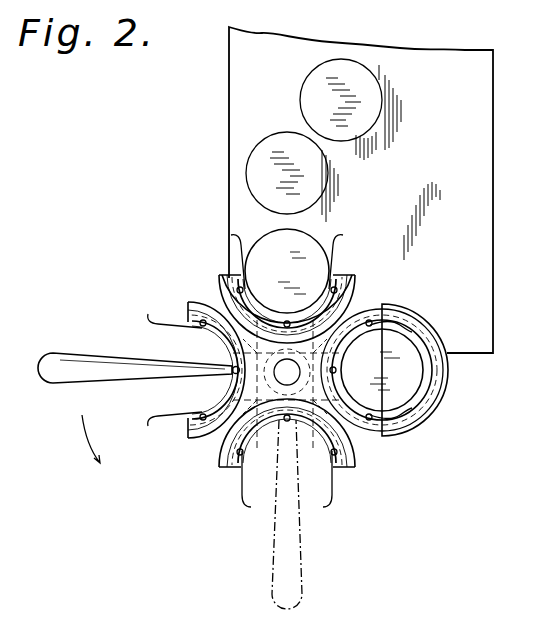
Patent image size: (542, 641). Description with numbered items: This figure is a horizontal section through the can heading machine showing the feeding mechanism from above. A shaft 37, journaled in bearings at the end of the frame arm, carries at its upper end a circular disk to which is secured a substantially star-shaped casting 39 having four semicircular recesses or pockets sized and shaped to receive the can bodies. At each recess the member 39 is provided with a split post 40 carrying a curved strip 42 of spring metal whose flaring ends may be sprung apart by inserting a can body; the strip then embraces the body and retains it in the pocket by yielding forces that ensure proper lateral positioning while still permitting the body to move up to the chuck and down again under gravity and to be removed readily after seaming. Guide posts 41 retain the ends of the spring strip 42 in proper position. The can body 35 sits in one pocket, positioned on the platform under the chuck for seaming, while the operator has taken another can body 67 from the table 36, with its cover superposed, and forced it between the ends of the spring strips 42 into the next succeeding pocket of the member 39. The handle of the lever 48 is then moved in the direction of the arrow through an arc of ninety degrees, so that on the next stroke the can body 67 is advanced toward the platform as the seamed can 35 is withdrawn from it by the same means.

The can body 35 is at (413, 387).
The table 36 is at (361, 190).
The shaft 37 is at (288, 374).
The star-shaped casting 39 is at (347, 280).
The split post 40 is at (232, 373).
The guide posts 41 is at (200, 325).
The curved strip of spring metal 42 is at (337, 240).
The lever 48 is at (73, 360).
The can body 67 is at (268, 242).